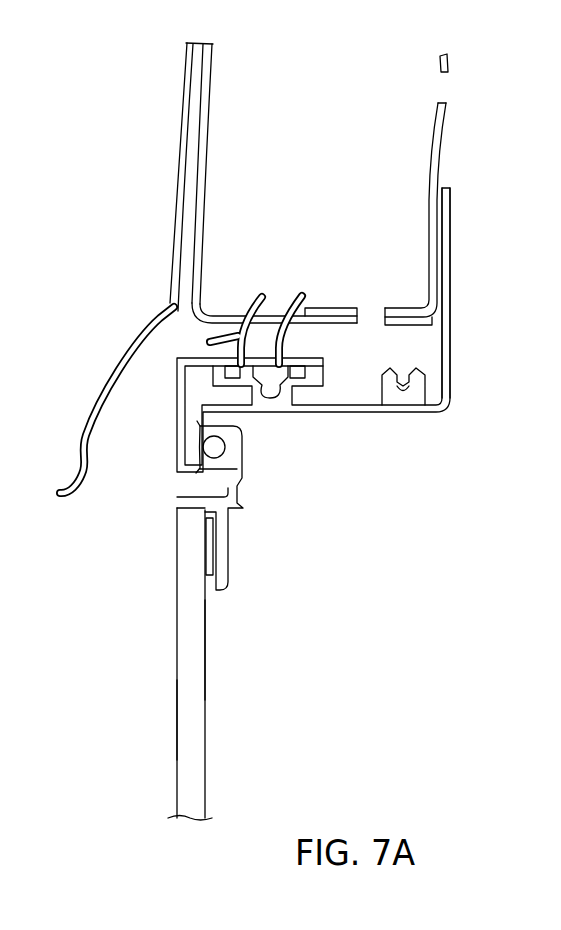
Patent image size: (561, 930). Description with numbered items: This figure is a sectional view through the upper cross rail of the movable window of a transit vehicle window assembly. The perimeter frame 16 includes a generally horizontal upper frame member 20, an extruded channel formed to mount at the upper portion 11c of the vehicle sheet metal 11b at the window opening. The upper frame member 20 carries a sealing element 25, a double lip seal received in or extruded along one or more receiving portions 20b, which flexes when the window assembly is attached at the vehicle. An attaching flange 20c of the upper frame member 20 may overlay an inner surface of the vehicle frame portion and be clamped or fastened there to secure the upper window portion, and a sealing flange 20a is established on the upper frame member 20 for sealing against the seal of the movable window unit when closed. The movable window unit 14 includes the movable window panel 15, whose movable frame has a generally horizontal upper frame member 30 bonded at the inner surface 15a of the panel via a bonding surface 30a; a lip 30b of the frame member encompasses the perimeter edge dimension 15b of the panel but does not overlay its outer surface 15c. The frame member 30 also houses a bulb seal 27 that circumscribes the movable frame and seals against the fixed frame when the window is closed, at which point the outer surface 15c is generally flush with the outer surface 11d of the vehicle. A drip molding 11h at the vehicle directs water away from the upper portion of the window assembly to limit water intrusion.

The vehicle sheet metal 11b is at (449, 157).
The upper portion of the vehicle sheet metal 11c is at (230, 280).
The outer surface of the transit vehicle 11d is at (170, 213).
The drip molding 11h is at (96, 382).
The movable window unit 14 is at (155, 648).
The movable window panel 15 is at (198, 680).
The inner surface of the movable window panel 15a is at (207, 635).
The perimeter edge dimension of the movable window panel 15b is at (188, 513).
The outer surface of the movable window panel 15c is at (177, 715).
The perimeter frame 16 is at (472, 438).
The upper frame member 20 is at (377, 450).
The sealing flange 20a is at (187, 444).
The receiving portions 20b is at (305, 370).
The attaching flange 20c is at (453, 265).
The sealing element 25 is at (265, 292).
The bulb seal 27 is at (215, 462).
The upper frame member of the movable frame 30 is at (237, 500).
The bonding surface 30a is at (210, 553).
The lip 30b is at (184, 499).